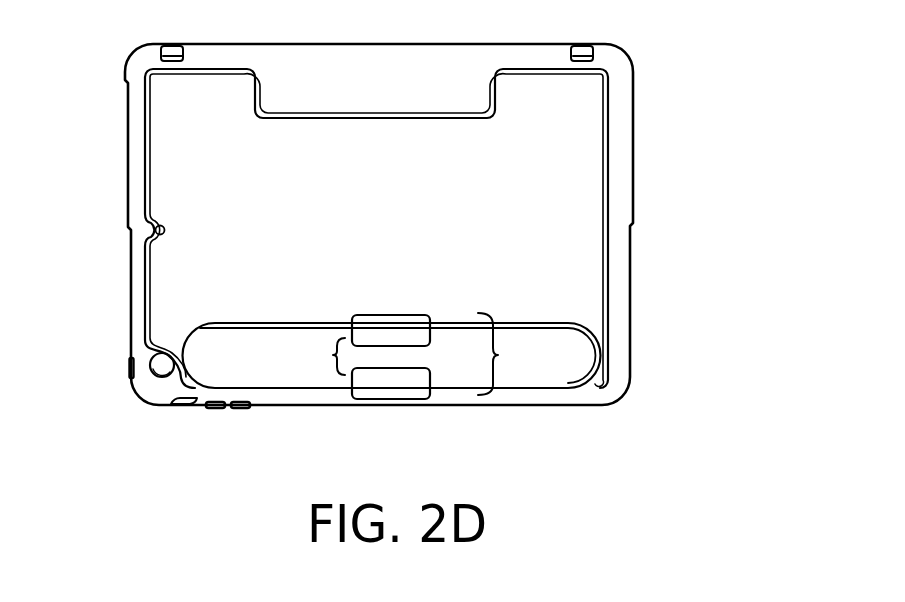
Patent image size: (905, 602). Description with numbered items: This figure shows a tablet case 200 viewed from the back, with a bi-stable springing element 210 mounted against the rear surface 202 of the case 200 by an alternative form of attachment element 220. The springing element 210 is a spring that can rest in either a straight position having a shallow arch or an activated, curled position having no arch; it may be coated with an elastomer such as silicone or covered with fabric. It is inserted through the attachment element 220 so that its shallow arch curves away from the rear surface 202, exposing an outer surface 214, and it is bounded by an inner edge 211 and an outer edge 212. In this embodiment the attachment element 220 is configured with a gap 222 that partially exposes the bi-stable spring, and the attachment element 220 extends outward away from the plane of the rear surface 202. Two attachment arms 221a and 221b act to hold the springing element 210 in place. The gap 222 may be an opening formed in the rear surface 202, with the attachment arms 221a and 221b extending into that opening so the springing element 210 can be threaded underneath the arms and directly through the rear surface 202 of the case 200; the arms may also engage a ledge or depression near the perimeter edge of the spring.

The tablet case 200 is at (658, 133).
The rear surface 202 is at (198, 188).
The bi-stable springing element 210 is at (250, 376).
The outer edge 212 is at (302, 391).
The outer surface 214 is at (245, 358).
The inner edge 211 is at (553, 323).
The attachment element 220 is at (500, 355).
The attachment arm 221a is at (397, 327).
The attachment arm 221b is at (398, 388).
The gap 222 is at (333, 355).